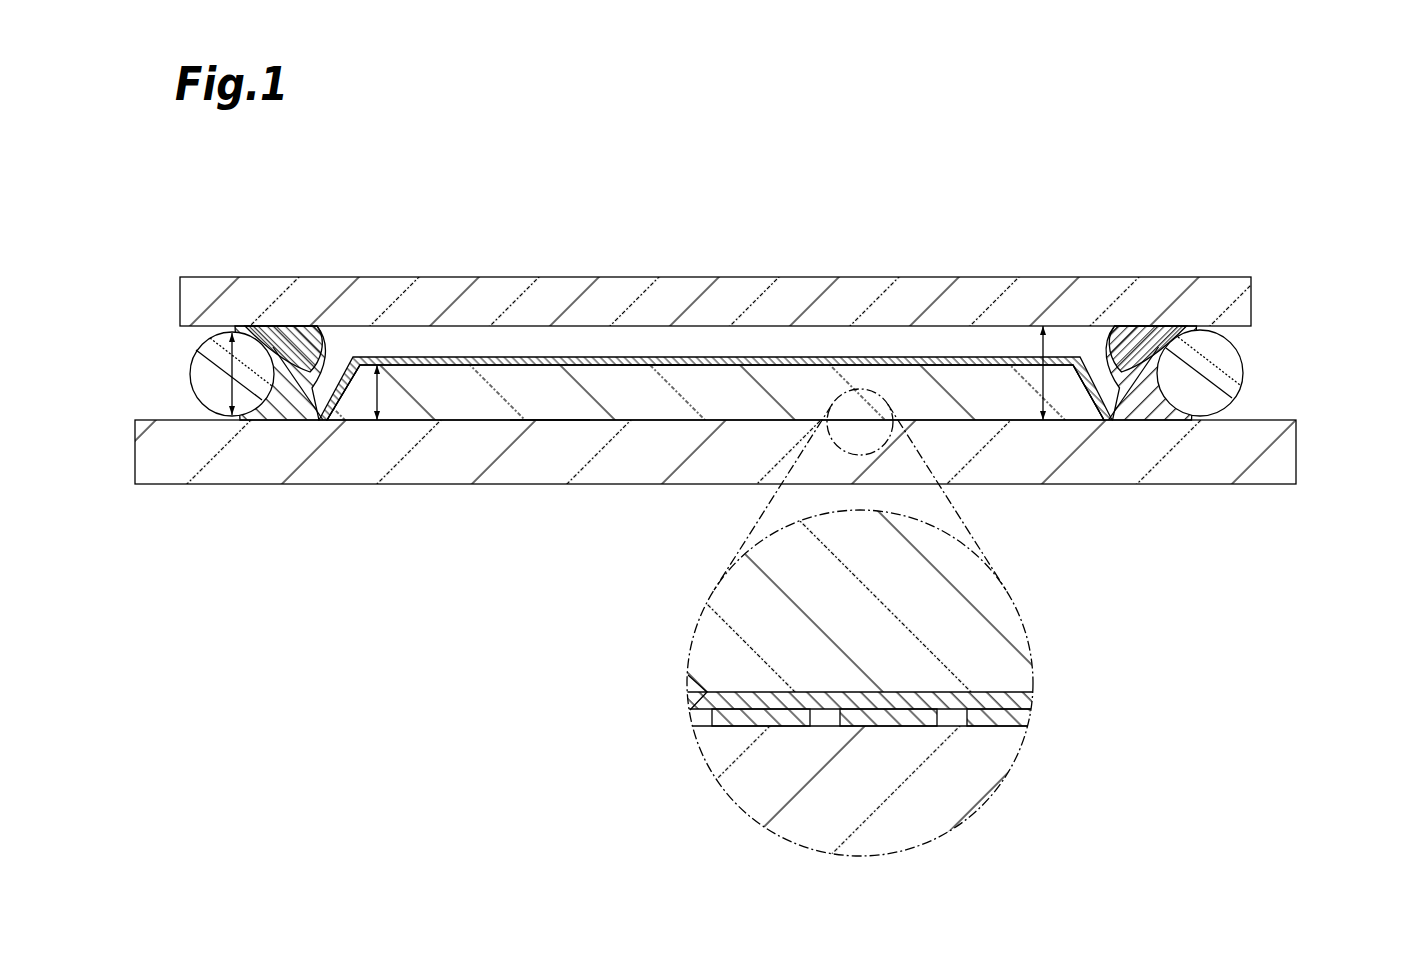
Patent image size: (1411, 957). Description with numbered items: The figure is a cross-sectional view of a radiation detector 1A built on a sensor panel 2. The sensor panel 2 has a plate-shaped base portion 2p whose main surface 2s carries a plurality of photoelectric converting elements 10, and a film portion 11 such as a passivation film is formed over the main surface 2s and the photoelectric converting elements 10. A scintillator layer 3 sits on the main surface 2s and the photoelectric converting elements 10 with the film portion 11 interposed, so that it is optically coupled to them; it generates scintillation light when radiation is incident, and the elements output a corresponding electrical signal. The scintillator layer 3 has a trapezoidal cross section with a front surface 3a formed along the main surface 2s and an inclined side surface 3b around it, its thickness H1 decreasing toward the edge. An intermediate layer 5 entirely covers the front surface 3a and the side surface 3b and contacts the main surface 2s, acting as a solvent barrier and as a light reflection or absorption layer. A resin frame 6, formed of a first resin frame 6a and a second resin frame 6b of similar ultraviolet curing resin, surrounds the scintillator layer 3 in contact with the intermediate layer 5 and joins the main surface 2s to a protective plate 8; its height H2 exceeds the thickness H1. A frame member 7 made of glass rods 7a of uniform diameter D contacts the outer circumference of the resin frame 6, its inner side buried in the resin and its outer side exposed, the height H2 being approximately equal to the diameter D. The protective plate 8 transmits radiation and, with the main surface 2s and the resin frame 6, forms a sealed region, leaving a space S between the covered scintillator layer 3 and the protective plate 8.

The radiation detector 1A is at (1330, 154).
The sensor panel 2 is at (1280, 454).
The base portion 2p is at (1000, 760).
The main surface 2s is at (554, 406).
The scintillator layer 3 is at (465, 407).
The front surface 3a is at (646, 354).
The side surface 3b is at (322, 405).
The intermediate layer 5 is at (558, 360).
The resin frame 6 is at (382, 198).
The first resin frame 6a is at (297, 397).
The second resin frame 6b is at (273, 338).
The frame member 7 is at (717, 373).
The glass rod 7a is at (190, 376).
The protective plate 8 is at (907, 291).
The photoelectric converting elements 10 is at (1015, 718).
The film portion 11 is at (960, 701).
The diameter D is at (208, 385).
The thickness of the scintillator layer H1 is at (377, 397).
The height of the resin frame H2 is at (1044, 350).
The space S is at (763, 337).